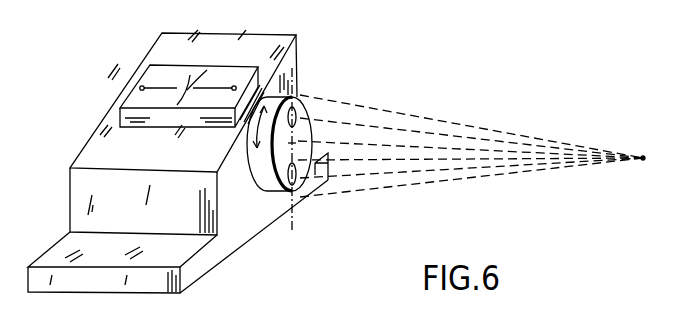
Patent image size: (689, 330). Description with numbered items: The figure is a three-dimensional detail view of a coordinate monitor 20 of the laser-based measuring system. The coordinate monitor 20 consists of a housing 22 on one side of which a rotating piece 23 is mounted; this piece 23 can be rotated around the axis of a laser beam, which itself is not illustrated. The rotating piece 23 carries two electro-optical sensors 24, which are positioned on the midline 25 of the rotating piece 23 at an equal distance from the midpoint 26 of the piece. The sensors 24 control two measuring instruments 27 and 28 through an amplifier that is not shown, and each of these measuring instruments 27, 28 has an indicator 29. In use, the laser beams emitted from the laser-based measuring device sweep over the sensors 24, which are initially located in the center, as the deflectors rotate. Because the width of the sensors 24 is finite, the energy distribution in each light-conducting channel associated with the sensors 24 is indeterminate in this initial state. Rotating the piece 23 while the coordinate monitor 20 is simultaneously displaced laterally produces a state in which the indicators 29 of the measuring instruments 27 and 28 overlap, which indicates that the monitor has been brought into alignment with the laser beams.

The coordinate monitor 20 is at (238, 280).
The housing 22 is at (245, 227).
The rotating piece 23 is at (307, 128).
The electro-optical sensors 24 is at (293, 112).
The midline 25 is at (293, 215).
The midpoint 26 is at (290, 144).
The measuring instrument 27 is at (165, 73).
The measuring instrument 28 is at (220, 75).
The indicators 29 is at (157, 89).